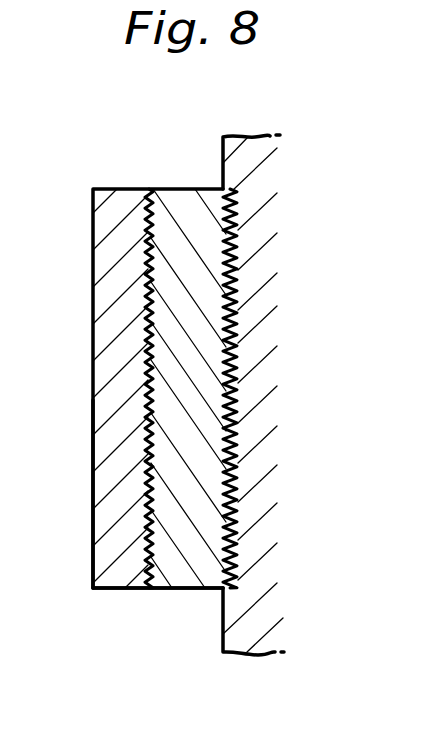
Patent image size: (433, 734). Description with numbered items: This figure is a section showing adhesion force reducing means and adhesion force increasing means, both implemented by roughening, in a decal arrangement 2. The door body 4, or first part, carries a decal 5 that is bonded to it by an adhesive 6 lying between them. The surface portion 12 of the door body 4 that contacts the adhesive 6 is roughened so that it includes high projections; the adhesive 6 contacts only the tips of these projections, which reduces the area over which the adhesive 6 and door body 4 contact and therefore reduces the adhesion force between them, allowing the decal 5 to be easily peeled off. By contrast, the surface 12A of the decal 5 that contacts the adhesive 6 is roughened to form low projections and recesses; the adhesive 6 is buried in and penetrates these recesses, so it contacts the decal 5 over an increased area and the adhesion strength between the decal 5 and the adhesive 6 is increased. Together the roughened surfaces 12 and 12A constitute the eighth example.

The rack body 2 is at (91, 481).
The door body 4 is at (223, 621).
The decal 5 is at (93, 588).
The adhesive 6 is at (172, 590).
The roughened surface portion of the door body 12 is at (238, 314).
The roughened surface of the decal 12A is at (150, 397).